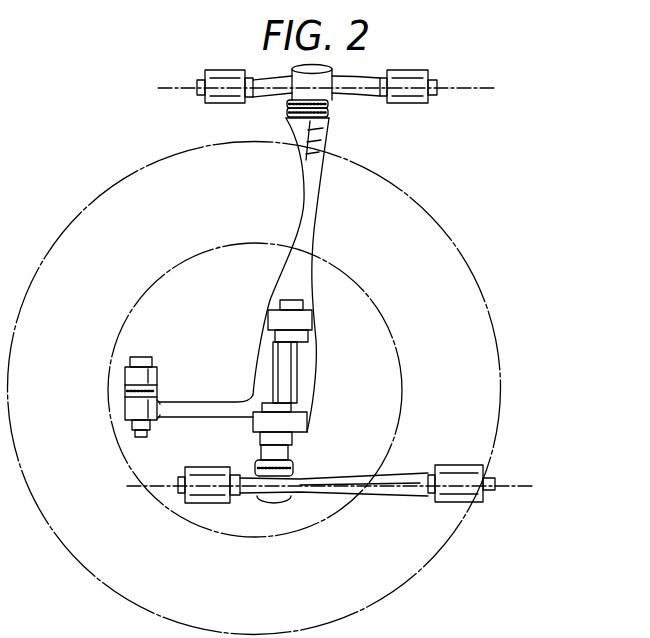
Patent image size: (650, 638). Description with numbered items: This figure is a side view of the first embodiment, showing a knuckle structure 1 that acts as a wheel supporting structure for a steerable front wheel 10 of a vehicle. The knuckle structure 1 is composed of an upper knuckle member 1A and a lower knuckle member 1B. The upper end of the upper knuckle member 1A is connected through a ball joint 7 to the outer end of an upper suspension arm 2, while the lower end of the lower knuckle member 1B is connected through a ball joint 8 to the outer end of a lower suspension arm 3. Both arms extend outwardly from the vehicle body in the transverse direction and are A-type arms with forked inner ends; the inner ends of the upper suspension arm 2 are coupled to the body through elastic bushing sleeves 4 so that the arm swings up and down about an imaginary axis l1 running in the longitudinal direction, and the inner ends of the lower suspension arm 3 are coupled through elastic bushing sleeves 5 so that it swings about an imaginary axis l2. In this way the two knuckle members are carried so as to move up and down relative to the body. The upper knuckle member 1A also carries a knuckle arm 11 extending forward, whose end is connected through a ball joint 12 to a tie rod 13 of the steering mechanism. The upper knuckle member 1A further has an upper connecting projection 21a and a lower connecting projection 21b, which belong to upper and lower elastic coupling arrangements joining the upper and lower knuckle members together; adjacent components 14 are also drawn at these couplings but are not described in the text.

The knuckle structure 1 is at (326, 364).
The upper knuckle member 1A is at (310, 350).
The lower knuckle member 1B is at (283, 375).
The upper suspension arm 2 is at (368, 93).
The lower suspension arm 3 is at (367, 498).
The elastic bushing sleeve 4 is at (205, 100).
The elastic bushing sleeve 5 is at (185, 500).
The ball joint 7 is at (332, 115).
The ball joint 8 is at (293, 469).
The steerable front wheel 10 is at (495, 318).
The knuckle arm 11 is at (200, 410).
The ball joint 12 is at (123, 388).
The tie rod 13 is at (155, 378).
The bearing blocks 14 is at (305, 312).
The upper connecting projection 21a is at (272, 320).
The lower connecting projection 21b is at (250, 425).
The imaginary axis l1 is at (467, 84).
The imaginary axis l2 is at (510, 480).